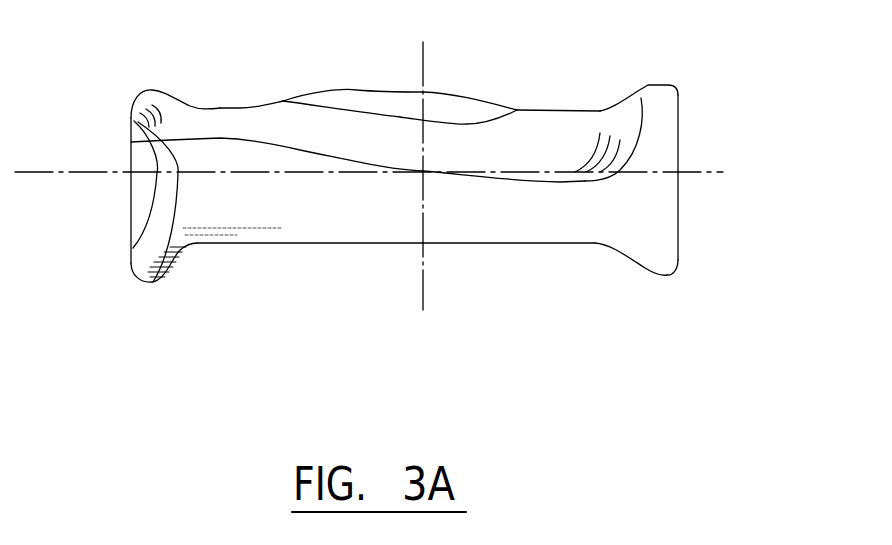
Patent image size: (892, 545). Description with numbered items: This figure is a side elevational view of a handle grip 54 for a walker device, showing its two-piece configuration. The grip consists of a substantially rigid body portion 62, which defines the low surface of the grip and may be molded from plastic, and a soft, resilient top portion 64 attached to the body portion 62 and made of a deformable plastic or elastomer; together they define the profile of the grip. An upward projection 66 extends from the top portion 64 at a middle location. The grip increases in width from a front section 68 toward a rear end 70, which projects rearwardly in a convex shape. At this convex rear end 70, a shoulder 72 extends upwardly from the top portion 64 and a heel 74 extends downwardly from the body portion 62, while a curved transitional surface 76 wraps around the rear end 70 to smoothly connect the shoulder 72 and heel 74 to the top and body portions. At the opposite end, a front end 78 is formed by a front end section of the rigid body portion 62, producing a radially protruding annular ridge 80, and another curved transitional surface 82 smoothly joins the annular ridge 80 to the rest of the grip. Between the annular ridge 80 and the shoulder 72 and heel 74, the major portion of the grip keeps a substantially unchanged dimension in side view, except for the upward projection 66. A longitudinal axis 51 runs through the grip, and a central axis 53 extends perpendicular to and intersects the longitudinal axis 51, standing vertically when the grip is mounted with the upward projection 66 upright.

The longitudinal axis 51 is at (700, 173).
The central axis 53 is at (423, 278).
The handle grip 54 is at (303, 246).
The body portion 62 is at (470, 245).
The top portion 64 is at (557, 110).
The upward projection 66 is at (445, 96).
The front section 68 is at (597, 110).
The rear end 70 is at (131, 142).
The shoulder 72 is at (147, 88).
The heel 74 is at (152, 283).
The curved transitional surface 76 is at (190, 106).
The front end 78 is at (678, 145).
The radially protruding annular ridge 80 is at (667, 275).
The curved transitional surface 82 is at (613, 252).